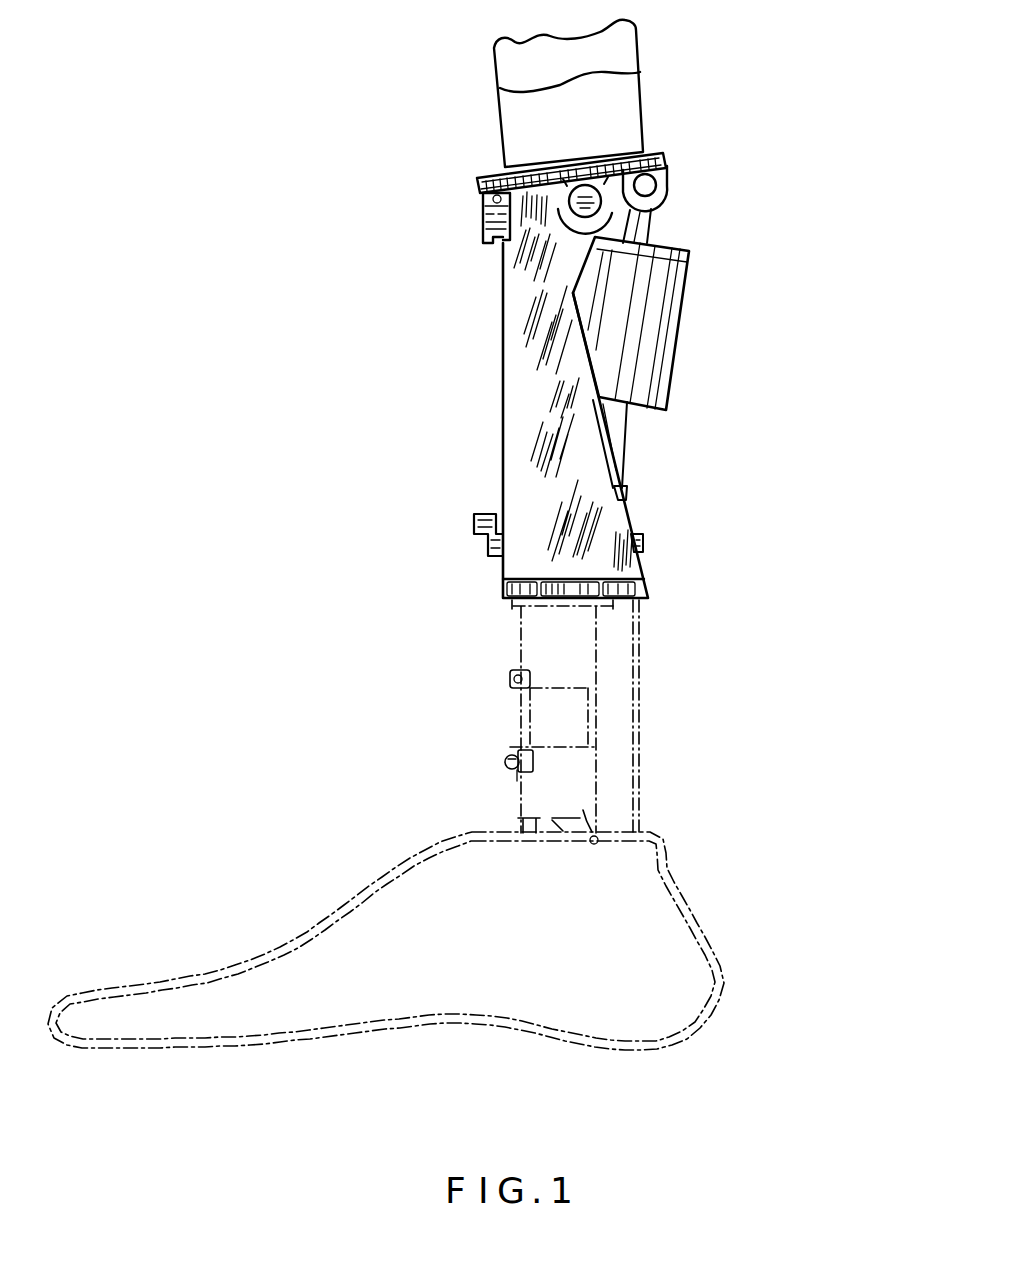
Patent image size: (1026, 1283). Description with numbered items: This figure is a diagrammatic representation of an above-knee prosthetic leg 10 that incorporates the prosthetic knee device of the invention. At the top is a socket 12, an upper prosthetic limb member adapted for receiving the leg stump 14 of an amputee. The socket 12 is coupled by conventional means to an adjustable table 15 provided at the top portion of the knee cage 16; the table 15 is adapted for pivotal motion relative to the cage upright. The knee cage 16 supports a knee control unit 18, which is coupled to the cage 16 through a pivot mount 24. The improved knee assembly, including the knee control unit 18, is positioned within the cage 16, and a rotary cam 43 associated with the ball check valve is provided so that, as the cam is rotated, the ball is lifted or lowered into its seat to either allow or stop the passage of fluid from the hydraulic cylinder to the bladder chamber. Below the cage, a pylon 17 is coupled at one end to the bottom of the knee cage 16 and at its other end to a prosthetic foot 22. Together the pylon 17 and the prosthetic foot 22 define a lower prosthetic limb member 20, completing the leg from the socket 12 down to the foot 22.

The above-knee prosthetic leg 10 is at (473, 318).
The socket 12 is at (623, 118).
The leg stump 14 is at (620, 52).
The adjustable table 15 is at (664, 153).
The knee cage 16 is at (520, 410).
The pylon 17 is at (590, 658).
The knee control unit 18 is at (705, 333).
The lower prosthetic limb member 20 is at (667, 733).
The prosthetic foot 22 is at (677, 948).
The pivot mount 24 is at (660, 200).
The rotary cam 43 is at (643, 543).